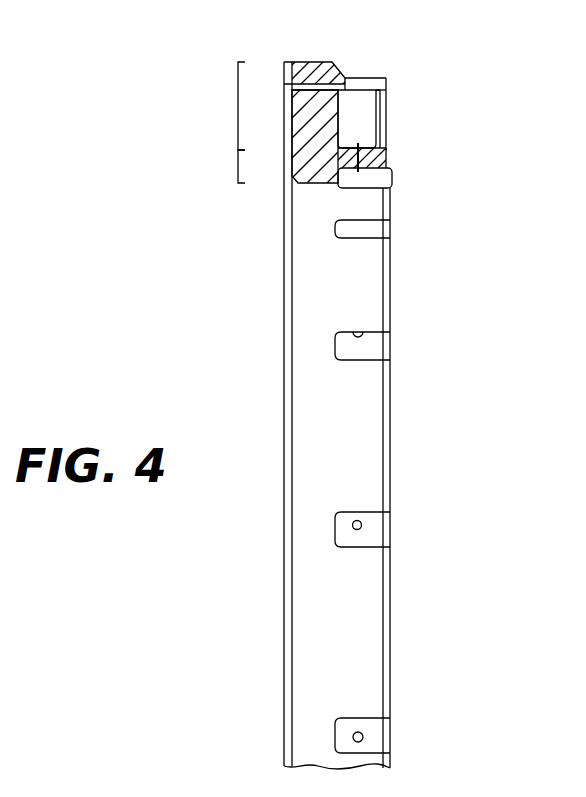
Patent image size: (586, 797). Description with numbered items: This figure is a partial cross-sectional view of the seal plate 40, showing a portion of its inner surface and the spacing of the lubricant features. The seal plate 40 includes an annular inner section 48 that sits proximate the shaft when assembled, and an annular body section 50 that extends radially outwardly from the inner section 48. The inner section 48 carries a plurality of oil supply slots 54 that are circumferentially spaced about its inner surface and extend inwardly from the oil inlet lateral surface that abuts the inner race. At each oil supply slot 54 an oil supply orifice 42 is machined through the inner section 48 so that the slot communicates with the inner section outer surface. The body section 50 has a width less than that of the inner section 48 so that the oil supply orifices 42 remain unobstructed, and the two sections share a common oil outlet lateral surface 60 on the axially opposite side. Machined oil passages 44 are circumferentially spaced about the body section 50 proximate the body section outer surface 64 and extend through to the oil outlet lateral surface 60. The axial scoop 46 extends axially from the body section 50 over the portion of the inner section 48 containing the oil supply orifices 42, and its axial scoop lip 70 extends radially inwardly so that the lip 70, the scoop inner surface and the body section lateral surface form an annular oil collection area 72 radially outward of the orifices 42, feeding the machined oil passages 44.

The seal plate 40 is at (505, 269).
The oil supply orifice 42 is at (392, 161).
The machined oil passage 44 is at (316, 83).
The axial scoop 46 is at (367, 80).
The inner section 48 is at (238, 168).
The body section 50 is at (238, 107).
The oil supply slot 54 is at (393, 230).
The oil outlet lateral surface 60 is at (283, 340).
The body section outer surface 64 is at (300, 62).
The axial scoop lip 70 is at (386, 92).
The oil collection area 72 is at (386, 118).